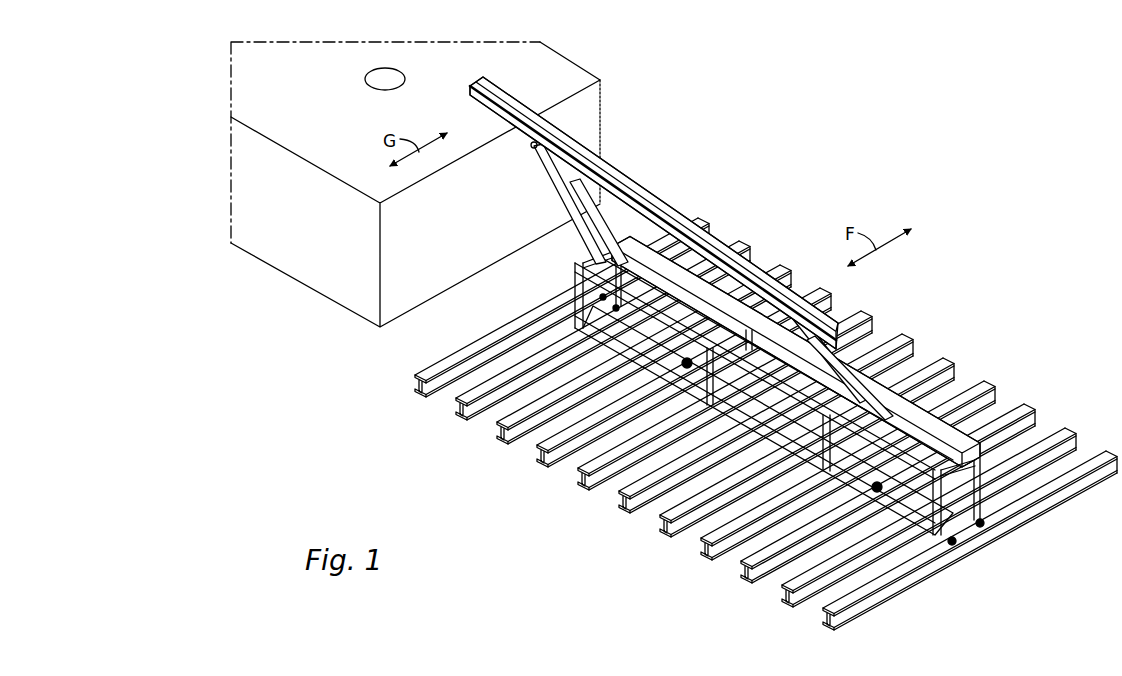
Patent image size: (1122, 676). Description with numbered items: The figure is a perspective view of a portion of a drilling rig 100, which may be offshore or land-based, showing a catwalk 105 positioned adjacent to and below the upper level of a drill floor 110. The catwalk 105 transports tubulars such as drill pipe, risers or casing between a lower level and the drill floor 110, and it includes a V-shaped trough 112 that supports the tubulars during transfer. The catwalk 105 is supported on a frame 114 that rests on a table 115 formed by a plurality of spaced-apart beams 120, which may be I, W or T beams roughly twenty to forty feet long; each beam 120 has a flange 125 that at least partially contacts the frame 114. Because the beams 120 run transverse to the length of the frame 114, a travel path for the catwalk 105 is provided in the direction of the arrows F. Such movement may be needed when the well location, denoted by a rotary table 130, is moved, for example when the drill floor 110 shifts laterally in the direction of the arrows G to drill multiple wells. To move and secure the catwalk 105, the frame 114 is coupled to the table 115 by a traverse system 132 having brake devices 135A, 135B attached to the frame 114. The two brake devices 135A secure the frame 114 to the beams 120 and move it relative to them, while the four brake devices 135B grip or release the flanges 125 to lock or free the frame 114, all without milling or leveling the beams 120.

The drilling rig 100 is at (622, 91).
The catwalk 105 is at (695, 198).
The drill floor 110 is at (562, 64).
The V-shaped trough 112 is at (613, 169).
The frame 114 is at (757, 446).
The table 115 is at (920, 302).
The beams 120 is at (737, 386).
The flange 125 is at (432, 374).
The rotary table 130 is at (365, 78).
The traverse system 132 is at (570, 278).
The brake devices 135A is at (683, 366).
The brake devices 135B is at (612, 307).